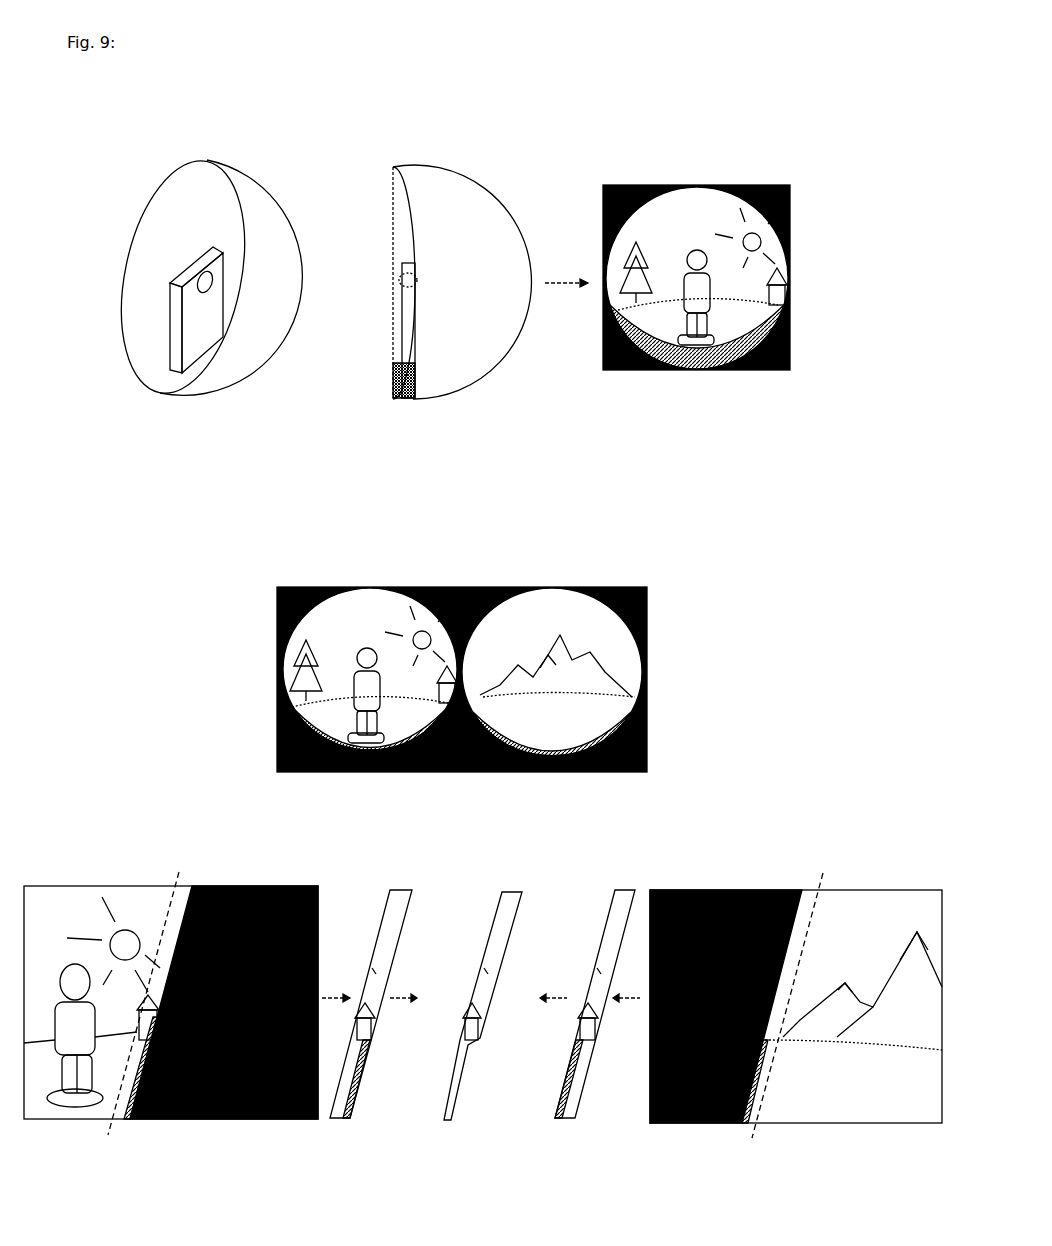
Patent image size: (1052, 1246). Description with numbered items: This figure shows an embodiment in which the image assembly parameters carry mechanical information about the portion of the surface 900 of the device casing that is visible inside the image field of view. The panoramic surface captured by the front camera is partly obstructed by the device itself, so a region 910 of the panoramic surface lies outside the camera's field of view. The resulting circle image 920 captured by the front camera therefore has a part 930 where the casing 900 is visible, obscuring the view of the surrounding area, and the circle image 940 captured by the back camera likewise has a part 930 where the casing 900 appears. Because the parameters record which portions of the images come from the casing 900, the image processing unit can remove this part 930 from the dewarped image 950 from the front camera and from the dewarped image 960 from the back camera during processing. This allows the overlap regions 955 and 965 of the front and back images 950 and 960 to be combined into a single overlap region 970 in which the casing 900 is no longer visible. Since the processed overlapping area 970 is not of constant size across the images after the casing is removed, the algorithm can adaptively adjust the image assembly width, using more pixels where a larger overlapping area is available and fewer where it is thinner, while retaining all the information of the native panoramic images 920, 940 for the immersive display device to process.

The surface of the mechanical casing of the device 900 is at (440, 200).
The region of the panoramic surface outside the field of view 910 is at (413, 397).
The circle image captured by the front camera 920 is at (712, 223).
The part of the image where the casing is visible 930 is at (707, 367).
The circle image captured by the back camera 940 is at (525, 618).
The dewarped image from front camera 950 is at (163, 1120).
The overlap region from the front image 955 is at (337, 1120).
The dewarped image from back camera 960 is at (823, 1095).
The overlap region from the back image 965 is at (582, 1097).
The overlap region 970 is at (463, 1090).